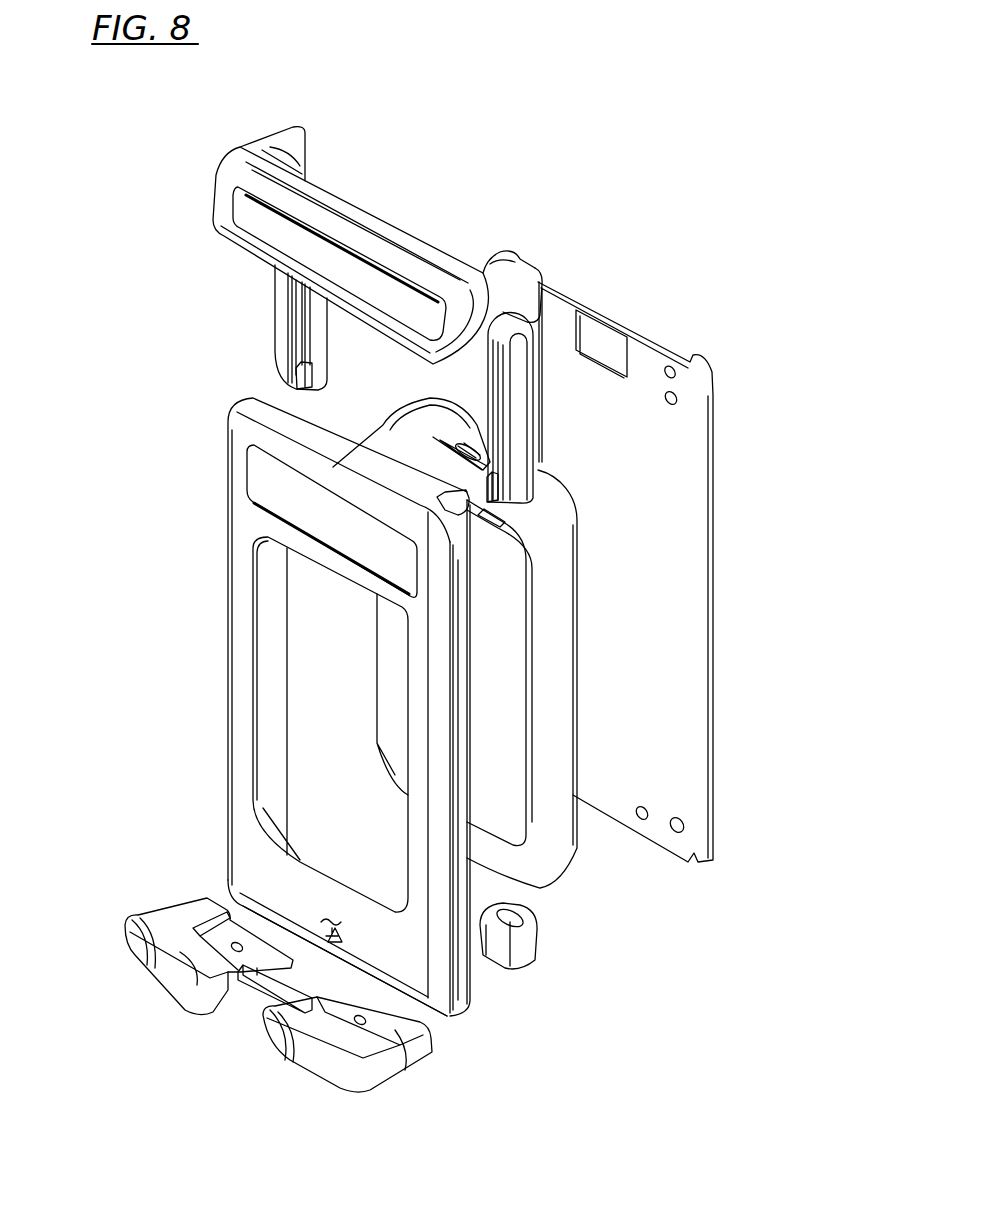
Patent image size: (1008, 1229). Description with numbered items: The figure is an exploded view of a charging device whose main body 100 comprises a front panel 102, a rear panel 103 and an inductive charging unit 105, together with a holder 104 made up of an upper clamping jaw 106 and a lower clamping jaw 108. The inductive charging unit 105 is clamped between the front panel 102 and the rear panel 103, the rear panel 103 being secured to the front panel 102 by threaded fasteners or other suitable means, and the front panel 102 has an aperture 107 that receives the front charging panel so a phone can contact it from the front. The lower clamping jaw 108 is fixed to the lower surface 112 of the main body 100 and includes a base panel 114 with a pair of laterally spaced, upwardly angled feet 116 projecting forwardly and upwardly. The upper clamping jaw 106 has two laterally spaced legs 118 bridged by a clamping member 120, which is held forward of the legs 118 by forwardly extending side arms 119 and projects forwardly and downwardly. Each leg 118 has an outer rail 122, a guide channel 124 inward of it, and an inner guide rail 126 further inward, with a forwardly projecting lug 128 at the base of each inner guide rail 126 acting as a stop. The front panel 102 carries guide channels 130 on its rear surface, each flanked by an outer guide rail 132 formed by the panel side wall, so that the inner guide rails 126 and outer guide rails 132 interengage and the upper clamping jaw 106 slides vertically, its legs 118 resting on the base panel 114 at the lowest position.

The main body 100 is at (775, 800).
The front panel 102 is at (243, 712).
The rear panel 103 is at (661, 467).
The holder 104 is at (157, 183).
The inductive charging unit 105 is at (501, 612).
The upper clamping jaw 106 is at (354, 213).
The aperture 107 is at (270, 797).
The lower clamping jaw 108 is at (363, 1052).
The lower surface 112 is at (460, 995).
The base panel 114 is at (254, 979).
The upwardly angled feet 116 is at (153, 965).
The legs 118 is at (526, 293).
The side arms 119 is at (261, 147).
The clamping member 120 is at (395, 280).
The outer rail 122 is at (525, 412).
The guide channel 124 is at (300, 333).
The inner guide rail 126 is at (488, 367).
The forwardly projecting lug 128 is at (490, 483).
The guide channel 130 is at (447, 507).
The outer guide rail 132 is at (458, 717).